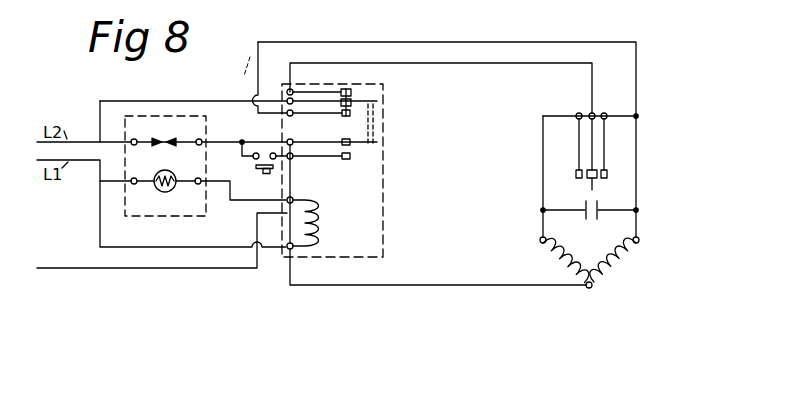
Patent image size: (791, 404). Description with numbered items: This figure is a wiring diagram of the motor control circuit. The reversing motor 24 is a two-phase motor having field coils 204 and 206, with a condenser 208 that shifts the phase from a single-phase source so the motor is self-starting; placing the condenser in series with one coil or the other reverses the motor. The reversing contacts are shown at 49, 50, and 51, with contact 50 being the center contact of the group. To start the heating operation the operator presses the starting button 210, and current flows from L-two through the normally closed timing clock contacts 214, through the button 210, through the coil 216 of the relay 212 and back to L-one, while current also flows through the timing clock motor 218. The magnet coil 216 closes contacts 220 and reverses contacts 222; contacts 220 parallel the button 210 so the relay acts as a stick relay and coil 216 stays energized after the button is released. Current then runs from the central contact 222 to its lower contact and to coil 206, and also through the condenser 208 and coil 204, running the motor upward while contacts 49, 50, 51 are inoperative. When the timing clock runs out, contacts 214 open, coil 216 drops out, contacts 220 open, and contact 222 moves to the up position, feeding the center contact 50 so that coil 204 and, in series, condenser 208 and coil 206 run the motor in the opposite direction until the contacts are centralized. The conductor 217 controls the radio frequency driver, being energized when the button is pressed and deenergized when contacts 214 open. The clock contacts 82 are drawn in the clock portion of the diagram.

The clock contacts 82 is at (205, 131).
The timing clock motor 218 is at (150, 190).
The timing clock contacts 214 is at (165, 145).
The starting button 210 is at (258, 170).
The conductor 217 is at (208, 271).
The relay 212 is at (375, 211).
The contacts 222 is at (360, 102).
The contacts 220 is at (358, 156).
The coil 216 is at (319, 227).
The reversing contact 49 is at (579, 134).
The reversing contact 51 is at (605, 162).
The center contact 50 is at (592, 189).
The condenser 208 is at (594, 220).
The reversing motor 24 is at (589, 262).
The field coil 204 is at (556, 251).
The field coil 206 is at (616, 270).